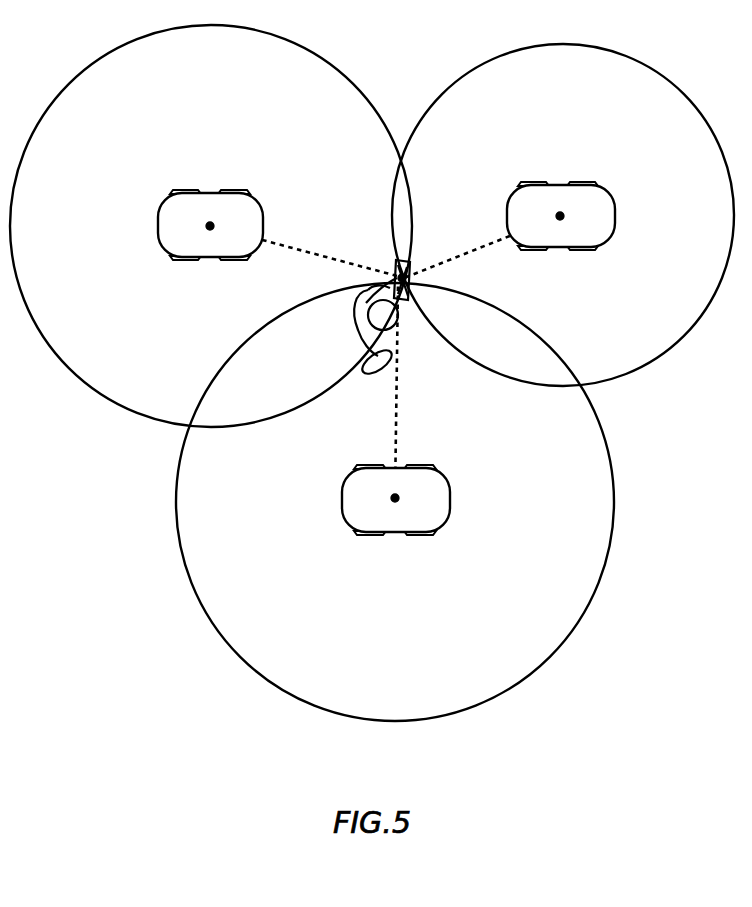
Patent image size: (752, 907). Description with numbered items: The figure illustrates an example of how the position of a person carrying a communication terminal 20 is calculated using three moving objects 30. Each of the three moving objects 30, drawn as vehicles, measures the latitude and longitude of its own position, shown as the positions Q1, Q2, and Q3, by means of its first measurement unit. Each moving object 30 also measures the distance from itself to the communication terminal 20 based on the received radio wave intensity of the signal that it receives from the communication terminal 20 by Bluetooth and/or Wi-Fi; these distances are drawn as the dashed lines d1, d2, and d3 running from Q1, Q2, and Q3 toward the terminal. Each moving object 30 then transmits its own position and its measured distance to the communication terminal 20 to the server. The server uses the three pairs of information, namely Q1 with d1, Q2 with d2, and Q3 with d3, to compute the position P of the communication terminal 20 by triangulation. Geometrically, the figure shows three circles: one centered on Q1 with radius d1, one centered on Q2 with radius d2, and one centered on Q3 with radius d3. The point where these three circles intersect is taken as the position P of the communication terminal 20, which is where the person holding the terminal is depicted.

The moving object 30 is at (158, 226).
The communication terminal 20 is at (410, 300).
The position of the communication terminal P is at (393, 268).
The position of the first moving object Q1 is at (210, 224).
The position of the second moving object Q2 is at (560, 214).
The position of the third moving object Q3 is at (395, 501).
The distance from the first moving object to the communication terminal d1 is at (305, 249).
The distance from the second moving object to the communication terminal d2 is at (482, 247).
The distance from the third moving object to the communication terminal d3 is at (415, 391).